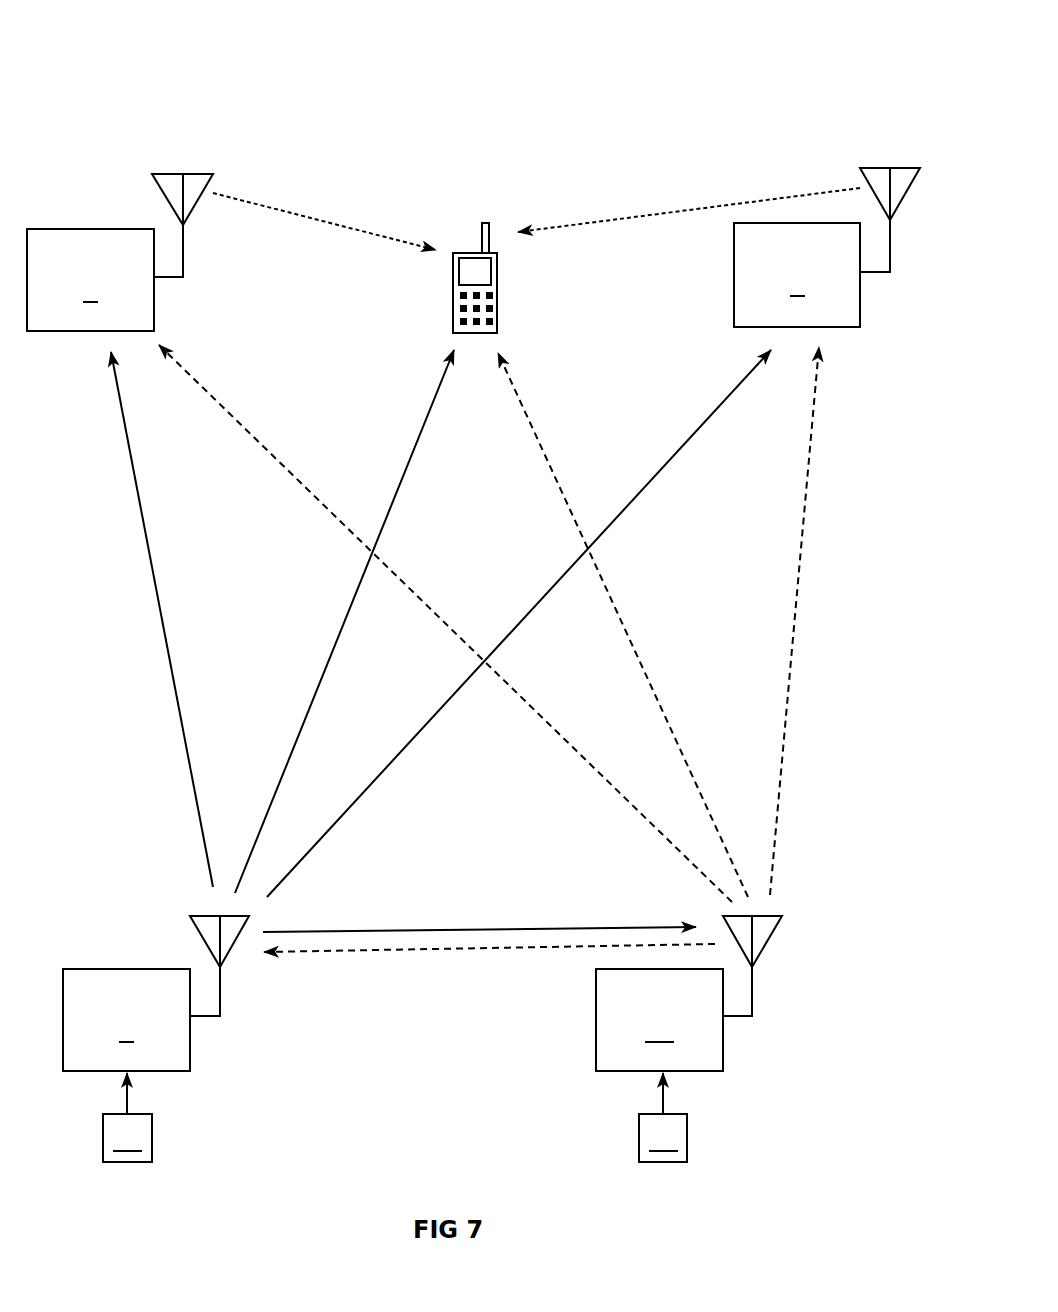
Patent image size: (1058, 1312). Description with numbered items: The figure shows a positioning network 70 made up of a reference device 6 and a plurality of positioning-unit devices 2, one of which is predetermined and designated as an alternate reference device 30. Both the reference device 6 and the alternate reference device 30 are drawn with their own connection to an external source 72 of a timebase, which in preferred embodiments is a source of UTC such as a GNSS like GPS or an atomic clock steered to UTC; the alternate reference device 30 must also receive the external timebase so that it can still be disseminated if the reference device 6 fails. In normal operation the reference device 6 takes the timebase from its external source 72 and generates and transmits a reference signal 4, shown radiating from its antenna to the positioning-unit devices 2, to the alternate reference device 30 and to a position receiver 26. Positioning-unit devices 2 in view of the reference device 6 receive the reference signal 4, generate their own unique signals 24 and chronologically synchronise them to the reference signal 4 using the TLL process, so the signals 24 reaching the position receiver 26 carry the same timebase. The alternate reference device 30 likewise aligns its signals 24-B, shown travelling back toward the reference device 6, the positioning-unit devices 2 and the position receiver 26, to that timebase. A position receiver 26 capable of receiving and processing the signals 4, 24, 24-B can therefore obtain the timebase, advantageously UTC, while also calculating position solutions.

The positioning network 70 is at (262, 79).
The positioning-unit device 2 is at (473, 249).
The position receiver 26 is at (453, 287).
The reference device 6 is at (156, 993).
The alternate reference device 30 is at (689, 993).
The external source 72 is at (395, 1117).
The signal 24 is at (327, 222).
The reference signal 4 is at (137, 502).
The signal 24-B is at (258, 447).